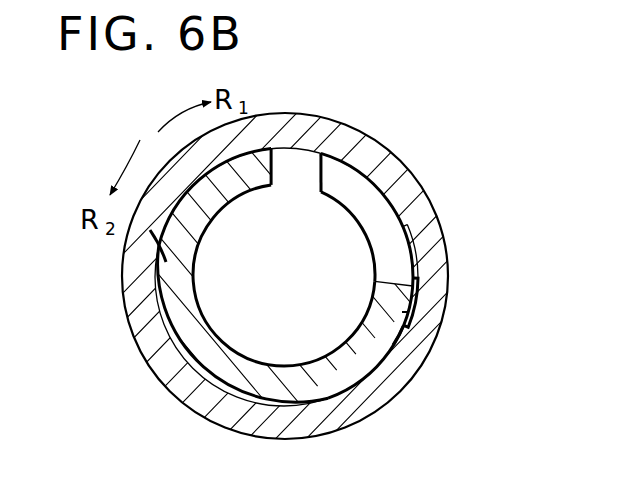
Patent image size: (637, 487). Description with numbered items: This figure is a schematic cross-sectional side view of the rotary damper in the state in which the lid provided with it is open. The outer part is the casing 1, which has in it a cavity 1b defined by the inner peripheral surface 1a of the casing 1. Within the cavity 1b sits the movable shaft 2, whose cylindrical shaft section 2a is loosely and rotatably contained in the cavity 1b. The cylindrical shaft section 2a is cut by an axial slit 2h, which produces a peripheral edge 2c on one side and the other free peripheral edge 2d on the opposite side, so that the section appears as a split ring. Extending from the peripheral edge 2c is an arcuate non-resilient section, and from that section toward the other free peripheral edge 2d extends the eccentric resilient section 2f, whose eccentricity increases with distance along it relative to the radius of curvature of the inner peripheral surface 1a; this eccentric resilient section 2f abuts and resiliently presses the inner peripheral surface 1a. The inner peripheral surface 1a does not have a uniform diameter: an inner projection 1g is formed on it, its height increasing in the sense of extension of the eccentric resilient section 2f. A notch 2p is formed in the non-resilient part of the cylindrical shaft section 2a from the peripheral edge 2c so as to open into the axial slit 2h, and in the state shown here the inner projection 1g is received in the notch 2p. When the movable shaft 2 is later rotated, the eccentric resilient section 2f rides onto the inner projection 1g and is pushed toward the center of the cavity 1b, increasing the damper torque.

The casing 1 is at (404, 161).
The inner peripheral surface 1a is at (410, 326).
The cavity 1b is at (253, 333).
The inner projection 1g is at (393, 236).
The movable shaft 2 is at (373, 377).
The cylindrical shaft section 2a is at (173, 353).
The peripheral edge 2c is at (347, 162).
The other free peripheral edge 2d is at (283, 168).
The eccentric resilient section 2f is at (158, 250).
The axial slit 2h is at (327, 167).
The notch 2p is at (388, 268).